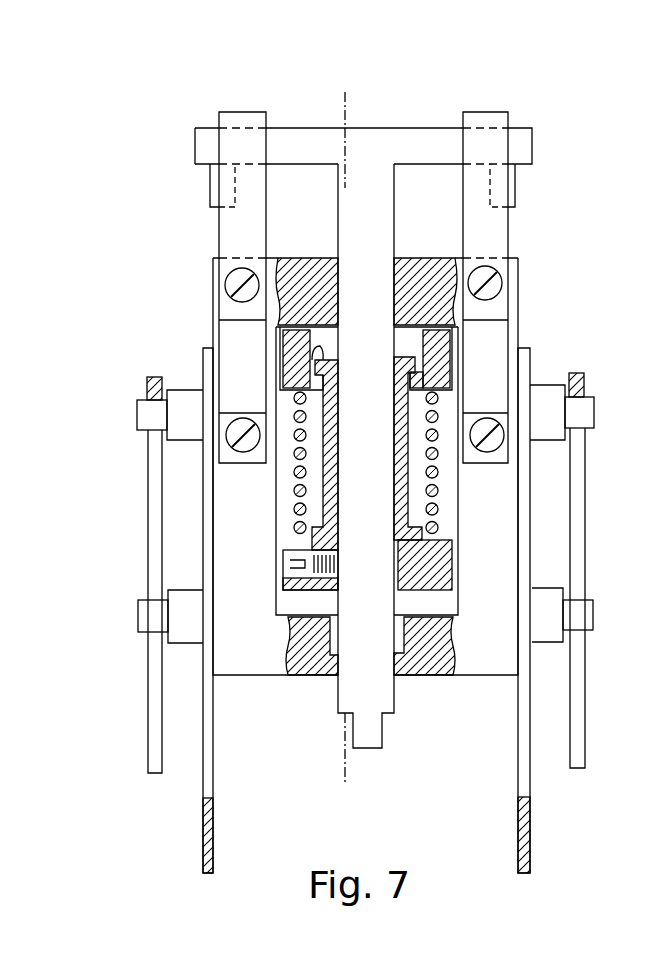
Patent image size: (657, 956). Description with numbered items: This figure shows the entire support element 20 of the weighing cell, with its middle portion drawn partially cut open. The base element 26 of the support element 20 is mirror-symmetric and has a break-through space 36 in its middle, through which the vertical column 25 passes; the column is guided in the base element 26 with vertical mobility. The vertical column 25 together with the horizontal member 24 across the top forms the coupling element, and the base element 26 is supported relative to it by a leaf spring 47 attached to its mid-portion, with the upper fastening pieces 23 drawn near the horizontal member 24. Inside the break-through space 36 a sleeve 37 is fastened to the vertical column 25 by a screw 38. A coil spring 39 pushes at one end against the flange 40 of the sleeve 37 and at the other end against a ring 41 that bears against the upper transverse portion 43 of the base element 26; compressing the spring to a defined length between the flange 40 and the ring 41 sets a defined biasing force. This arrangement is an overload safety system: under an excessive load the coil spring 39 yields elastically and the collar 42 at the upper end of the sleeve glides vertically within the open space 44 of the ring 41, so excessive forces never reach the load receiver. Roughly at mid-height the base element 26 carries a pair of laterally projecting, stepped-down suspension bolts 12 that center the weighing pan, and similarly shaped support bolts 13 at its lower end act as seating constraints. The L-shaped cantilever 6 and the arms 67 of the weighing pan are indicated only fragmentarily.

The support element 20 is at (546, 127).
The horizontal member 24 is at (432, 140).
The leaf spring 47 is at (237, 231).
The fastening pieces 23 is at (210, 185).
The vertical column 25 is at (375, 210).
The base element 26 is at (505, 550).
The upper transverse portion 43 is at (302, 262).
The break-through space 36 is at (285, 525).
The collar 42 is at (321, 357).
The sleeve 37 is at (325, 478).
The screw 38 is at (300, 560).
The open space 44 is at (407, 347).
The ring 41 is at (430, 365).
The flange 40 is at (437, 552).
The coil spring 39 is at (440, 510).
The L-shaped cantilever 6 is at (203, 818).
The suspension bolts 12 is at (190, 428).
The support bolts 13 is at (190, 633).
The arms 67 is at (162, 731).